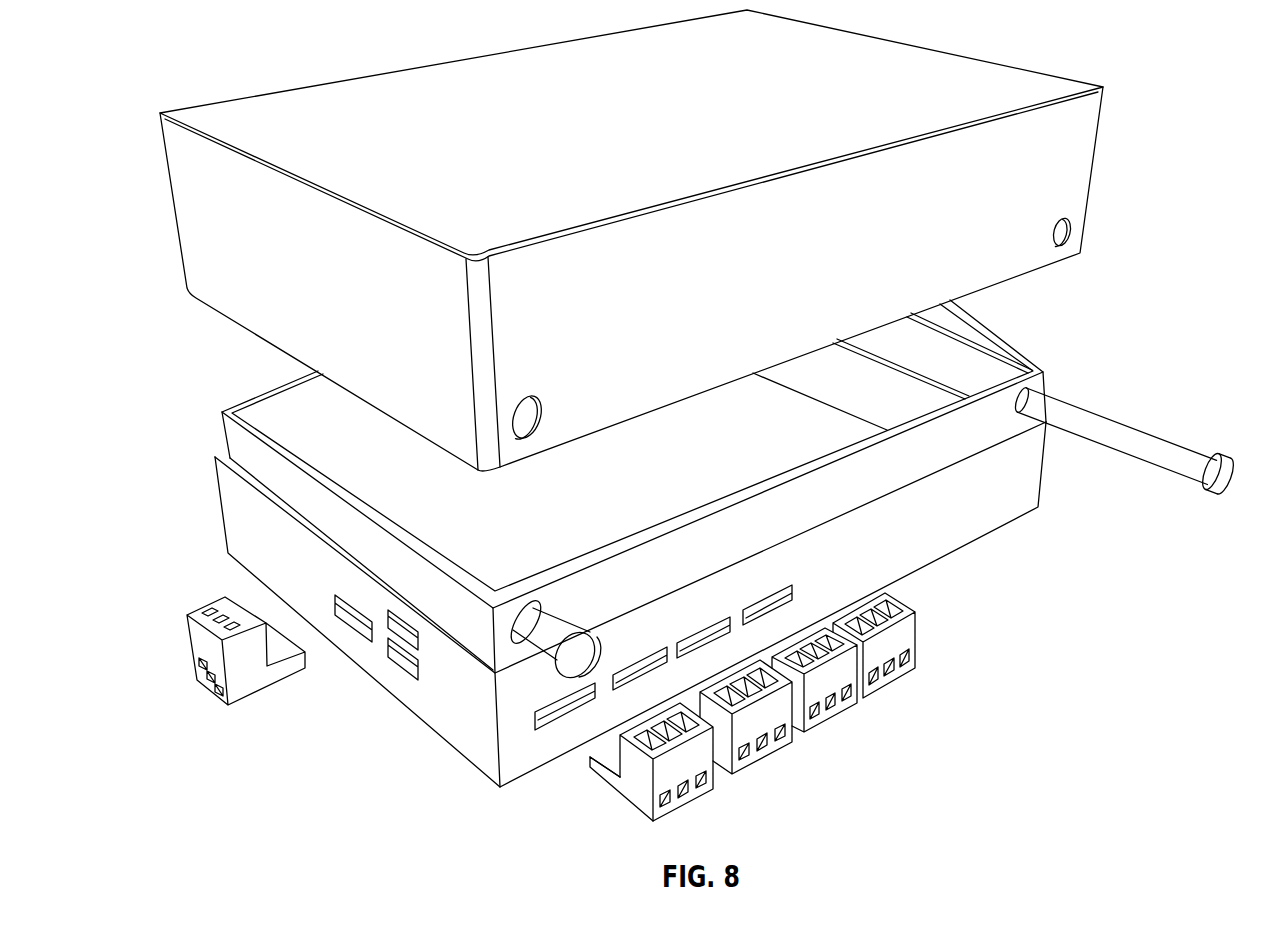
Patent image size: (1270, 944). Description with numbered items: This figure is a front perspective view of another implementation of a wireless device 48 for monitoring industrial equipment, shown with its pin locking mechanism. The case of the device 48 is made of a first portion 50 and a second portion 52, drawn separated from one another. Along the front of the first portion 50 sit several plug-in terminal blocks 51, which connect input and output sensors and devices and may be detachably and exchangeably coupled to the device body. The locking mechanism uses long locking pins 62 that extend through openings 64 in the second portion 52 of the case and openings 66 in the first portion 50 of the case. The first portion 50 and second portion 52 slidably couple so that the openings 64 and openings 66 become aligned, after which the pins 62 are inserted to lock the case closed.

The device 48 is at (1092, 716).
The first portion 50 is at (1046, 472).
The plug-in terminal blocks 51 is at (903, 640).
The second portion 52 is at (1096, 170).
The long locking pins 62 is at (1147, 437).
The openings 64 is at (1071, 229).
The openings 66 is at (1034, 391).